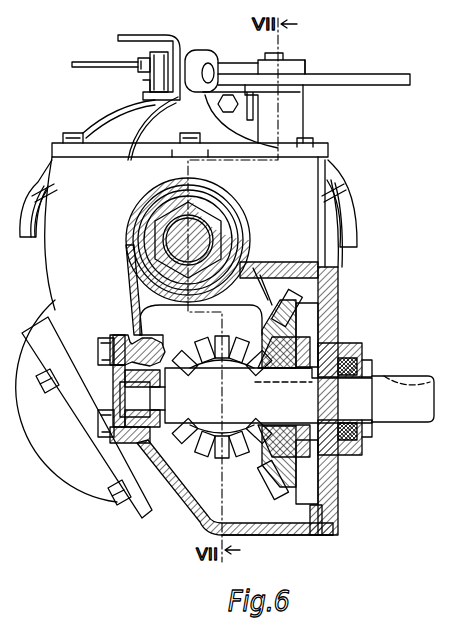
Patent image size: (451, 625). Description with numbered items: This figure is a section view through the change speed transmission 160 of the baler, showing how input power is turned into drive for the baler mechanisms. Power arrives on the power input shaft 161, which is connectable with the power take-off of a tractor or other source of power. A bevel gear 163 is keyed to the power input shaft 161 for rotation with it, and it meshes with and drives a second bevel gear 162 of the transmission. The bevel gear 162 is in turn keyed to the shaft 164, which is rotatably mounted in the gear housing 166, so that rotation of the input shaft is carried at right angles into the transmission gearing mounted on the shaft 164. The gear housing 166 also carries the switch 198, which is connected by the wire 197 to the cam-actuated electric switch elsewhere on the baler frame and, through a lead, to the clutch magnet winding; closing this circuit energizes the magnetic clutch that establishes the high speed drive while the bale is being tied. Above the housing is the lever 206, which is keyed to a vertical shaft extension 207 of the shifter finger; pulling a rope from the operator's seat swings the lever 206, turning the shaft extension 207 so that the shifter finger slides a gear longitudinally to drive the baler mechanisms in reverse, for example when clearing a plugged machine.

The change speed transmission 160 is at (300, 204).
The power input shaft 161 is at (388, 420).
The bevel gear 162 is at (203, 453).
The bevel gear 163 is at (276, 488).
The shaft 164 is at (203, 352).
The gear housing 166 is at (283, 535).
The wire 197 is at (90, 61).
The switch 198 is at (134, 76).
The lever 206 is at (352, 80).
The vertical shaft extension 207 is at (286, 57).